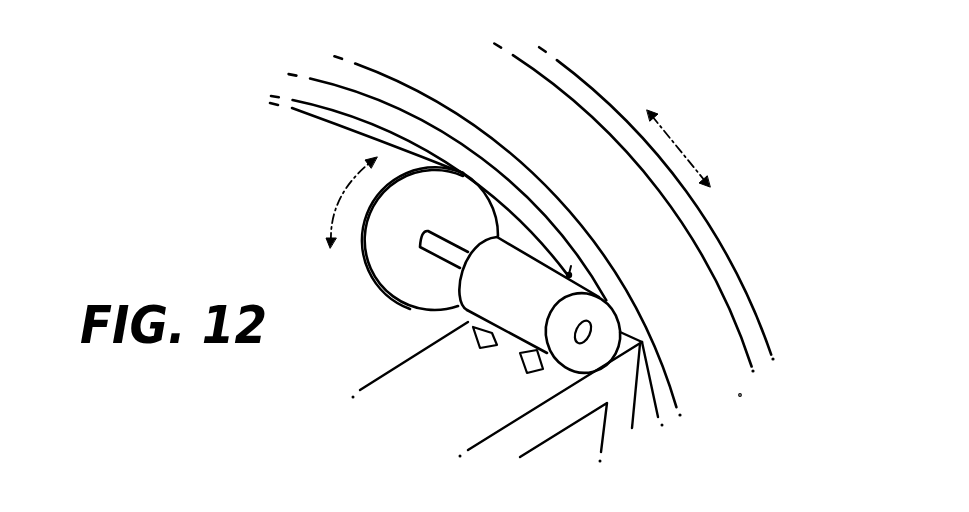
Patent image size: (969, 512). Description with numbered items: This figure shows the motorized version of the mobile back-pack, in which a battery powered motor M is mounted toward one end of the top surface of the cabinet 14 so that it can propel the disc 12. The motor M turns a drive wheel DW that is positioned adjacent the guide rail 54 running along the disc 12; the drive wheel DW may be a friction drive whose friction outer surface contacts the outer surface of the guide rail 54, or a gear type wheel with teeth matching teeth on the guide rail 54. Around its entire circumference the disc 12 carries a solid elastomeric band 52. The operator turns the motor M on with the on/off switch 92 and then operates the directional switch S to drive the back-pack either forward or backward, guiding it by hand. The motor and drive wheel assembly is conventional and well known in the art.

The disc 12 is at (689, 333).
The cabinet 14 is at (480, 407).
The solid elastomeric band 52 is at (707, 220).
The guide rail 54 is at (358, 123).
The on/off switch 92 is at (572, 273).
The drive wheel DW is at (453, 193).
The battery powered motor M is at (592, 292).
The directional switch S is at (467, 310).